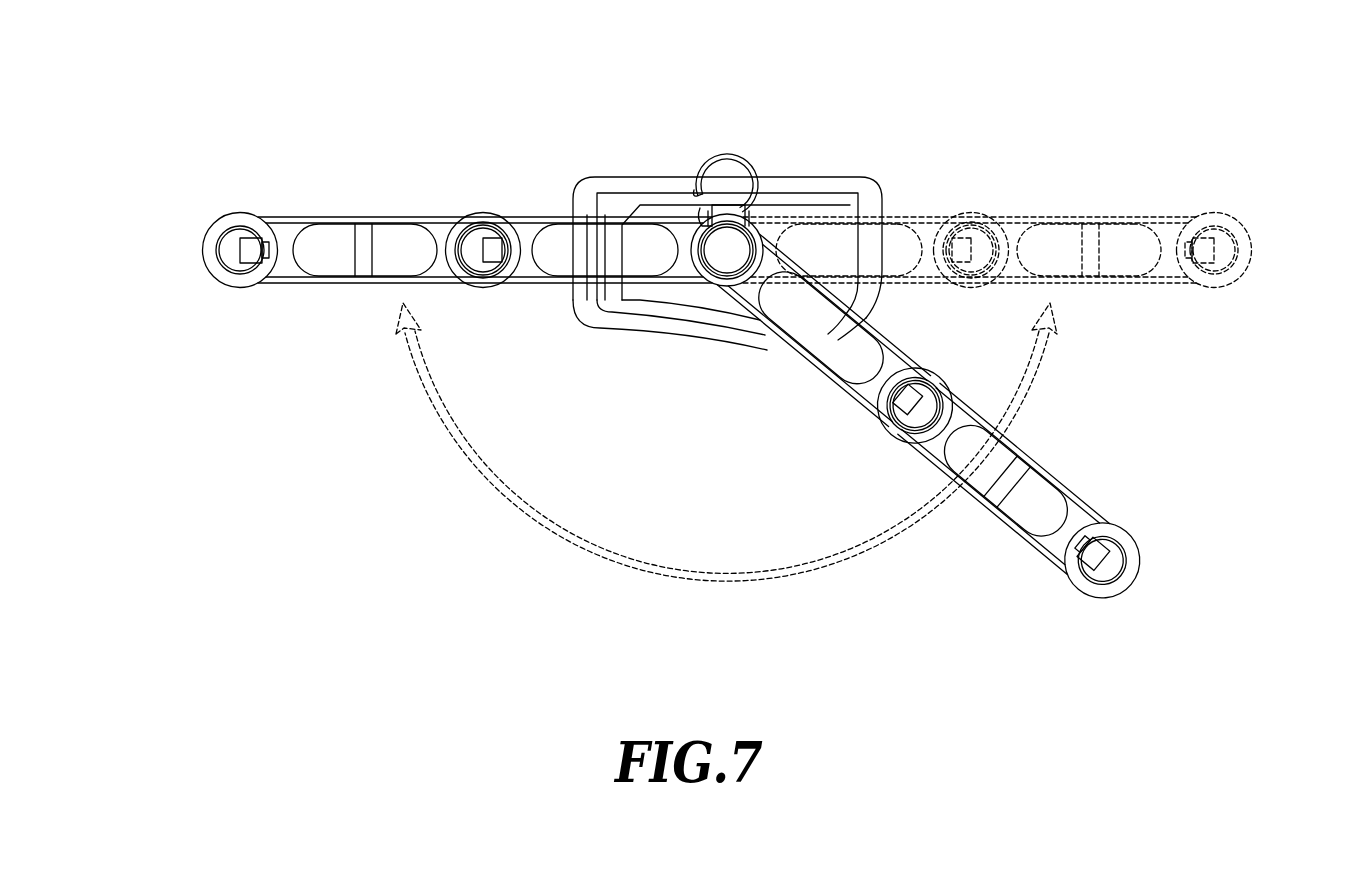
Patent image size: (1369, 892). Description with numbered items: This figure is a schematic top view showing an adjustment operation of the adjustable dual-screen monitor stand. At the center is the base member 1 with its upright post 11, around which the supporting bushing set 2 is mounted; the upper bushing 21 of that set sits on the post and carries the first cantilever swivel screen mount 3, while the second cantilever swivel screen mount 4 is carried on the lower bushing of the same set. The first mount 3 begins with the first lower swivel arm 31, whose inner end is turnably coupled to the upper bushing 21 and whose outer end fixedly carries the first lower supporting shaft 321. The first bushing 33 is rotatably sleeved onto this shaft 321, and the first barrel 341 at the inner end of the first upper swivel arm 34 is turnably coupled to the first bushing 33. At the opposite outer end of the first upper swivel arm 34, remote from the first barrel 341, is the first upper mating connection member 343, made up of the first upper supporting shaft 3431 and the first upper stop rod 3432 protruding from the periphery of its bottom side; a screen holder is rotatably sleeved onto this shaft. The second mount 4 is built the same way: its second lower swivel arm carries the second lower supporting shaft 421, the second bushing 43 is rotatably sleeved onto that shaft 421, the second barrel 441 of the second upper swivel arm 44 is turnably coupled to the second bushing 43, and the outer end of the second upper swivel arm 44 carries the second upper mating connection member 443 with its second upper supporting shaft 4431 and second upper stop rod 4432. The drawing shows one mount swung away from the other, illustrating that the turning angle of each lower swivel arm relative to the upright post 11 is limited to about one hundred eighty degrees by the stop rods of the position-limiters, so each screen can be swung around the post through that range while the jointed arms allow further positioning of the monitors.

The base member 1 is at (802, 180).
The upright post 11 is at (731, 237).
The supporting bushing set 2 is at (699, 137).
The upper bushing 21 is at (697, 213).
The first cantilever swivel screen mount 3 is at (431, 234).
The first lower swivel arm 31 is at (700, 280).
The first lower supporting shaft 321 is at (502, 278).
The first bushing 33 is at (475, 280).
The first upper swivel arm 34 is at (352, 223).
The first barrel 341 is at (501, 262).
The first upper mating connection member 343 is at (189, 180).
The first upper supporting shaft 3431 is at (238, 227).
The first upper stop rod 3432 is at (260, 252).
The second cantilever swivel screen mount 4 is at (1030, 423).
The second lower supporting shaft 421 is at (912, 432).
The second bushing 43 is at (890, 407).
The second upper swivel arm 44 is at (1047, 482).
The second barrel 441 is at (928, 382).
The second upper mating connection member 443 is at (1195, 555).
The second upper supporting shaft 4431 is at (1123, 575).
The second upper stop rod 4432 is at (1090, 535).